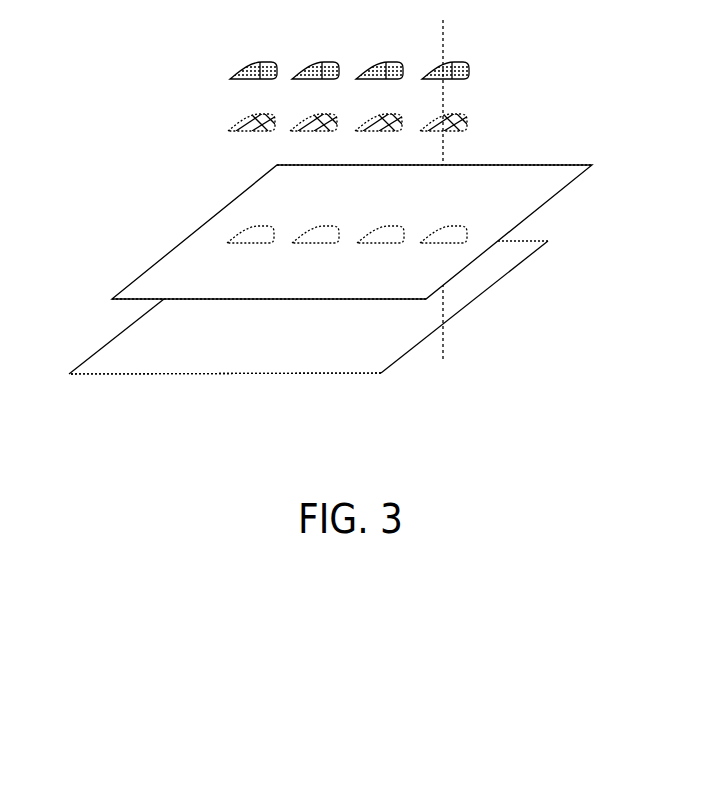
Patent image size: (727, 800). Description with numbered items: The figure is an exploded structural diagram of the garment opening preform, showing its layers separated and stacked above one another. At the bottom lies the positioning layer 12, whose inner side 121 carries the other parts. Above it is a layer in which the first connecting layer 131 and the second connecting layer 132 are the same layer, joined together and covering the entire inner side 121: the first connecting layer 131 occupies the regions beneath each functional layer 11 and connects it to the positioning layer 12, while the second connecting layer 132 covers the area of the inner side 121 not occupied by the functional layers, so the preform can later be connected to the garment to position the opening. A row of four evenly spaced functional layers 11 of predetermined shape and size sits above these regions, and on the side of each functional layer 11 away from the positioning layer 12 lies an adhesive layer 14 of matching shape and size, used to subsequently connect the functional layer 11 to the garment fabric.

The adhesive layer 14 is at (468, 63).
The functional layer 11 is at (468, 117).
The positioning layer 12 is at (462, 310).
The inner side 121 is at (275, 347).
The second connecting layer 132 is at (263, 207).
The first connecting layer 131 is at (242, 230).